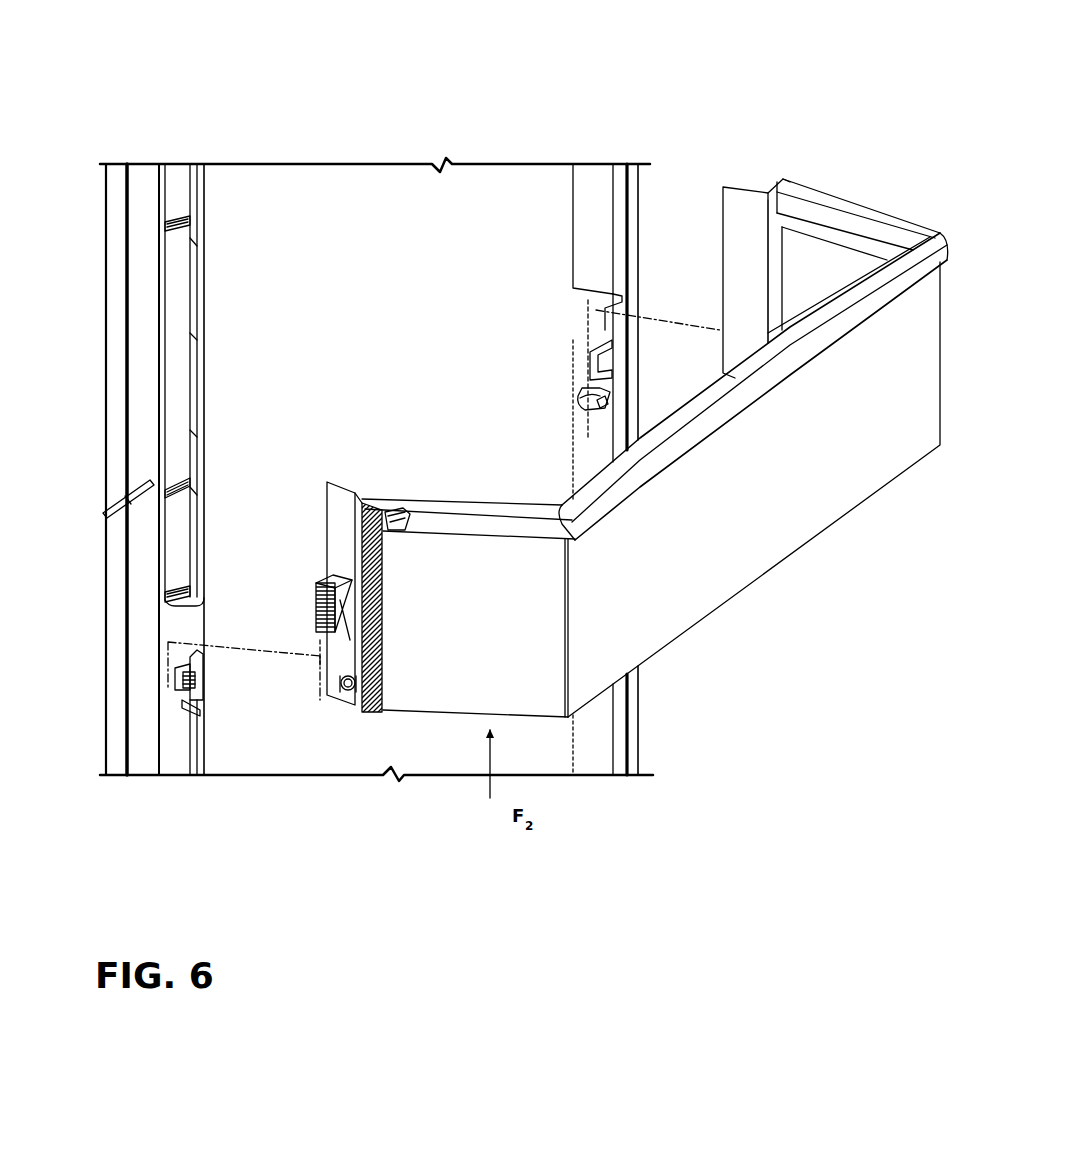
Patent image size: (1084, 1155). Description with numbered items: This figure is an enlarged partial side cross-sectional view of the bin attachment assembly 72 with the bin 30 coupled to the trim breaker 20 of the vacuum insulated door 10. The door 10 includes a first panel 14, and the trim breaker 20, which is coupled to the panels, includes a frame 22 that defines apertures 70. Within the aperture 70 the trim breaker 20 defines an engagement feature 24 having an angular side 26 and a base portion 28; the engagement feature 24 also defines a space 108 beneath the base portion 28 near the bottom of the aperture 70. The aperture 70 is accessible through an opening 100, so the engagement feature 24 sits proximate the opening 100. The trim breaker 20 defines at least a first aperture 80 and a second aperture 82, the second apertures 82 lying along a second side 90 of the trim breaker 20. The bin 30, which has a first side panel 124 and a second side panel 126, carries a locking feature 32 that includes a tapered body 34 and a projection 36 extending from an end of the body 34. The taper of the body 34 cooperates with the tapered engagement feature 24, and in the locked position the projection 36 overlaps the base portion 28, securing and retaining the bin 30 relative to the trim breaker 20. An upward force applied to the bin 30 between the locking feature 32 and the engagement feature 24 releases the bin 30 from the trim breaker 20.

The vacuum insulated door 10 is at (178, 122).
The first panel 14 is at (465, 215).
The trim breaker 20 is at (175, 325).
The frame 22 is at (618, 174).
The engagement feature 24 is at (592, 380).
The angular side 26 is at (595, 362).
The base portion 28 is at (592, 408).
The bin 30 is at (835, 452).
The locking feature 32 is at (317, 587).
The body 34 is at (317, 615).
The projection 36 is at (338, 655).
The aperture 70 is at (173, 613).
The bin attachment assembly 72 is at (786, 136).
The first aperture 80 is at (175, 512).
The second aperture 82 is at (752, 272).
The second side 90 is at (640, 725).
The opening 100 is at (178, 548).
The space 108 is at (600, 405).
The first side panel 124 is at (432, 700).
The second side panel 126 is at (830, 272).